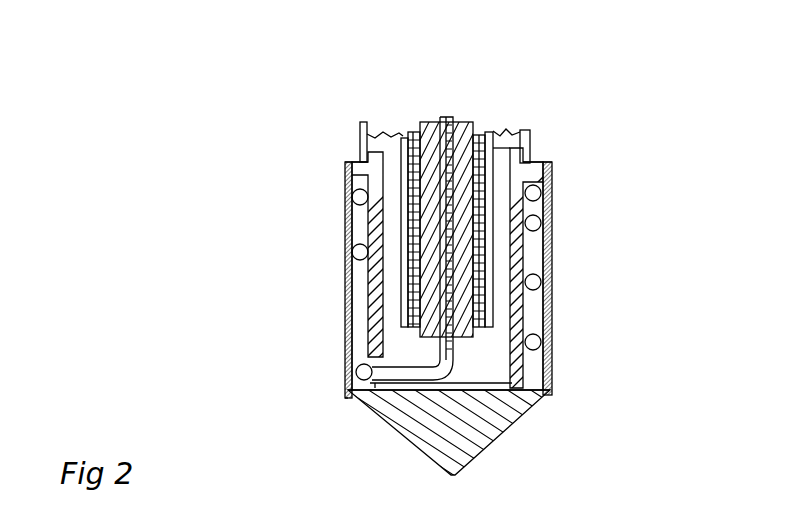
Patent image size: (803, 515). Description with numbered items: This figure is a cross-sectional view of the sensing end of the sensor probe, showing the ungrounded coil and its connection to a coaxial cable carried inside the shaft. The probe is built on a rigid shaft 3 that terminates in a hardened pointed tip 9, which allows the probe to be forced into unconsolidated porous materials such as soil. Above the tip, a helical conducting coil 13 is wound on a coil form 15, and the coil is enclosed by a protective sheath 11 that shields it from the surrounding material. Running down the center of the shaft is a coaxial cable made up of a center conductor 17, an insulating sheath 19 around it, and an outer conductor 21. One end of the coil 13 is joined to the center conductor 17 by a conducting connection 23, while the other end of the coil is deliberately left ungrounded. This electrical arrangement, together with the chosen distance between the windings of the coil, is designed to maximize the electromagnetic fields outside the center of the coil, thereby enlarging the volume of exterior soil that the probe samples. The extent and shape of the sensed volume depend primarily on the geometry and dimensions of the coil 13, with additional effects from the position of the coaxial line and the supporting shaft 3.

The rigid shaft 3 is at (537, 143).
The hardened pointed tip 9 is at (473, 470).
The protective sheath 11 is at (557, 367).
The helical conducting coil 13 is at (543, 270).
The coil form 15 is at (530, 207).
The center conductor of a coaxial cable 17 is at (448, 112).
The insulating sheath of a coaxial cable 19 is at (427, 115).
The outer conductor of a coaxial cable 21 is at (413, 125).
The conducting connection 23 is at (395, 365).